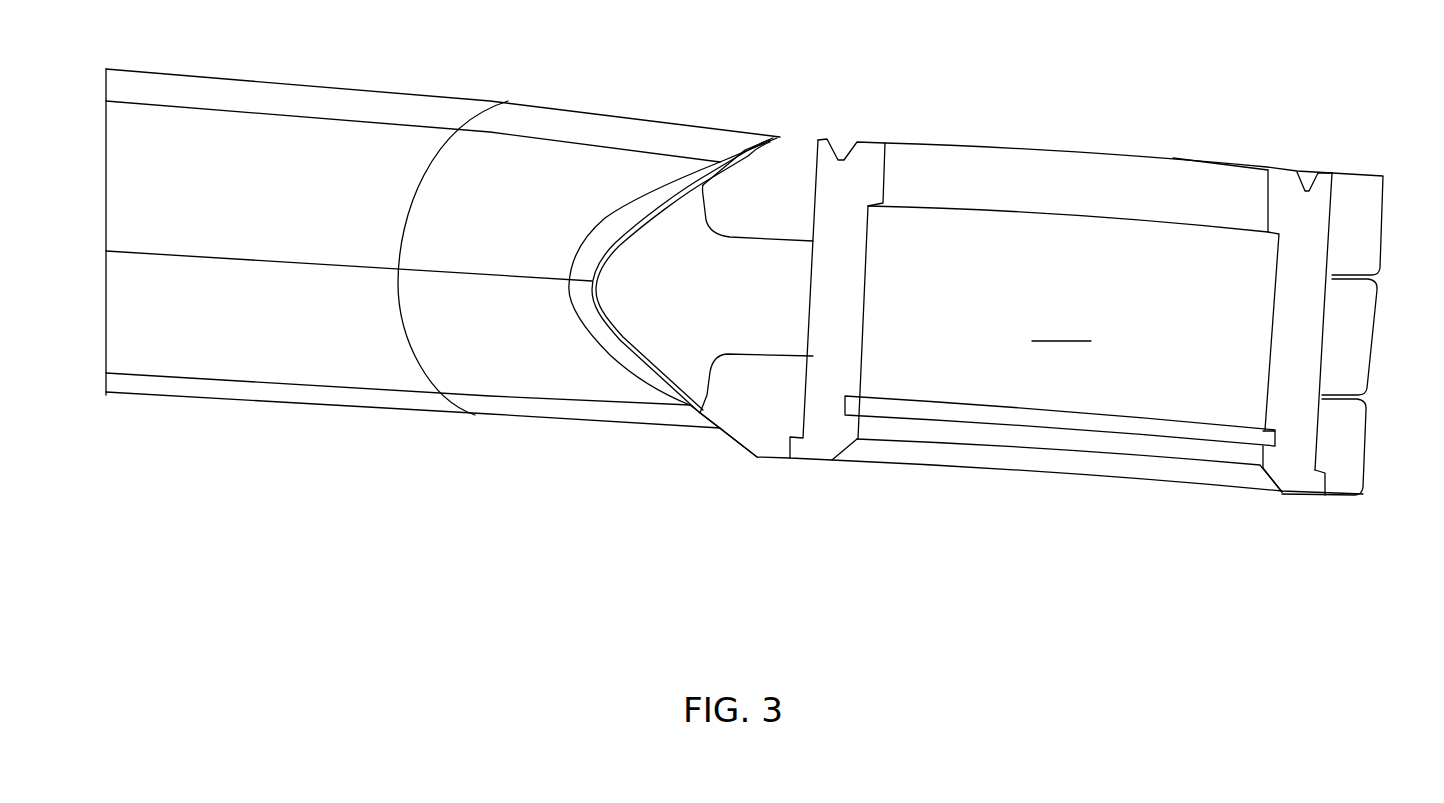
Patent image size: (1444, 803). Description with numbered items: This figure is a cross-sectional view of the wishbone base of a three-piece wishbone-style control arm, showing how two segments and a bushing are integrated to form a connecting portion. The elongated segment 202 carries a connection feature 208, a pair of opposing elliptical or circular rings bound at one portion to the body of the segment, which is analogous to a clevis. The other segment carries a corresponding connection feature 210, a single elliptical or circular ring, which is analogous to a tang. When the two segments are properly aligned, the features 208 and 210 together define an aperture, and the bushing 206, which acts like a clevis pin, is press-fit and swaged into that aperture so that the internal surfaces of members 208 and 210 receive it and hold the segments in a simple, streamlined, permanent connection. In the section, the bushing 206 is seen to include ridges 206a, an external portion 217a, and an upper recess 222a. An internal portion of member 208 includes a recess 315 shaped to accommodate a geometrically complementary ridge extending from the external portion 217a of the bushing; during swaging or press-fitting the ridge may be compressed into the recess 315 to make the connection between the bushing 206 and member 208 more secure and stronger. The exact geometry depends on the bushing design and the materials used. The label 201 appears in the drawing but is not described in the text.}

The nose / tip portion 201 is at (723, 173).
The segment 202 is at (282, 308).
The bushing 206 is at (985, 170).
The ridges 206a is at (1263, 468).
The connection feature 208 is at (1350, 232).
The connection feature 210 is at (655, 288).
The external portion 217a is at (1292, 433).
The upper recess 222a is at (1308, 170).
The recess 315 is at (1325, 475).